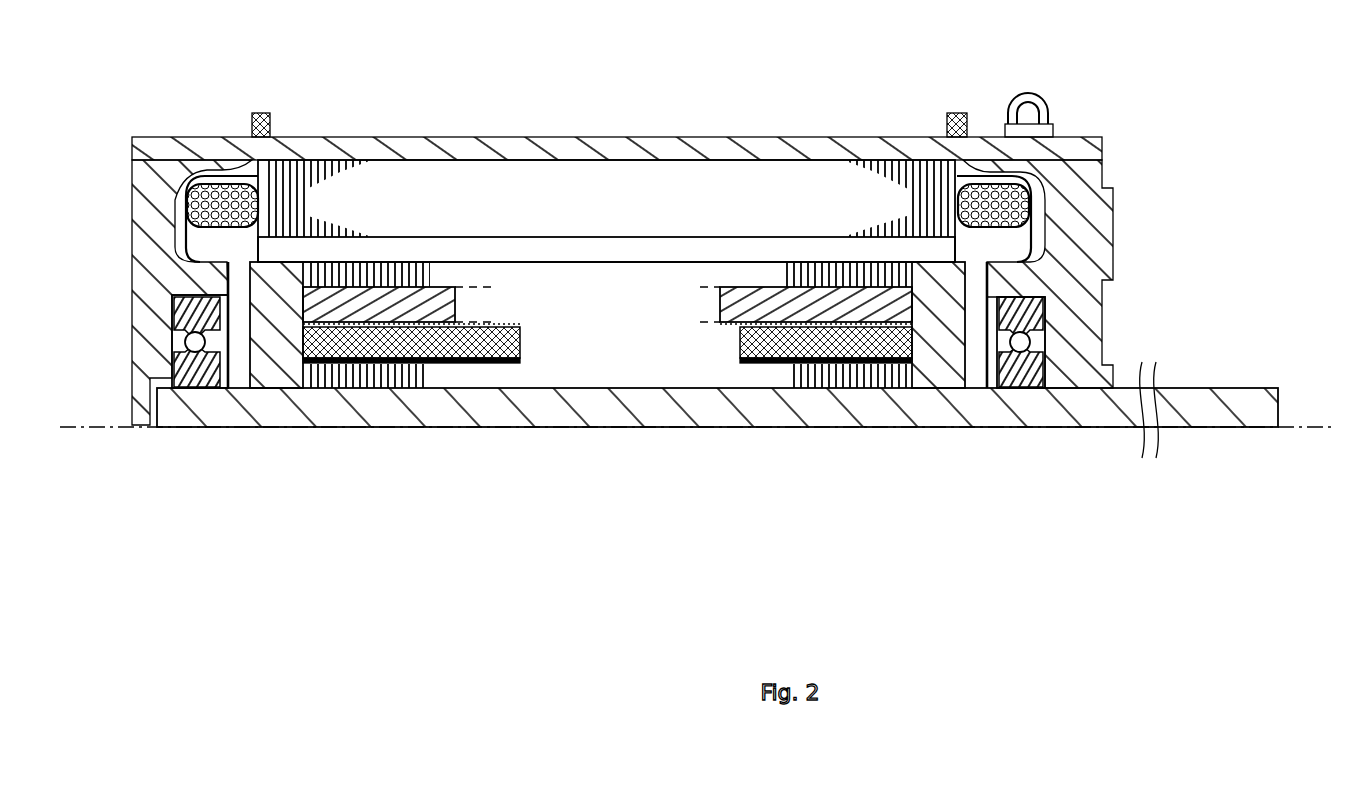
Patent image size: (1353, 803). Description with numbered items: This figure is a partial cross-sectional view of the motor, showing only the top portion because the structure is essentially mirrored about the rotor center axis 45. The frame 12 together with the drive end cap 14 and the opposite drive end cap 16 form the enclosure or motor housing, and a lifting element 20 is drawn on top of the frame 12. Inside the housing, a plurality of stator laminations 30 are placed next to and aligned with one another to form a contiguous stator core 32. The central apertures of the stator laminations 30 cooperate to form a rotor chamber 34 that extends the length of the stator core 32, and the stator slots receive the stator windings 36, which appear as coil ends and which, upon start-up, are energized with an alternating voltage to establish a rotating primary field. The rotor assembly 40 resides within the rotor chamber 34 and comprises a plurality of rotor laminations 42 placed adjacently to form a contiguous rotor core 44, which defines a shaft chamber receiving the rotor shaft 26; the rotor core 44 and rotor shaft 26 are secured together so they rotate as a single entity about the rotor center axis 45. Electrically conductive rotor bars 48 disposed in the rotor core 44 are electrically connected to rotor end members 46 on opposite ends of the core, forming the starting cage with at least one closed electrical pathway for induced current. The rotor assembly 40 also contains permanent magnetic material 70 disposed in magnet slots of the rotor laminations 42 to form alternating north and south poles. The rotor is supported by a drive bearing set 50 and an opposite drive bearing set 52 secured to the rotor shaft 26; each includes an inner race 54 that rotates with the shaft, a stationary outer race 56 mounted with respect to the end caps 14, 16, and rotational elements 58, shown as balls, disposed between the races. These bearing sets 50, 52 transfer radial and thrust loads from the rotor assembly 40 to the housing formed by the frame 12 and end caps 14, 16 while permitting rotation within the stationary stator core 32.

The frame 12 is at (373, 137).
The drive end cap 14 is at (1102, 143).
The opposite drive end cap 16 is at (148, 137).
The eyebolt 20 is at (1047, 100).
The rotor shaft 26 is at (1272, 415).
The stator laminations 30 is at (330, 158).
The stator core 32 is at (683, 187).
The rotor chamber 34 is at (943, 250).
The stator windings 36 is at (985, 190).
The rotor assembly 40 is at (702, 378).
The rotor laminations 42 is at (348, 385).
The rotor core 44 is at (485, 385).
The rotor center axis 45 is at (62, 432).
The rotor end members 46 is at (270, 375).
The rotor bars 48 is at (425, 300).
The drive bearing set 50 is at (180, 342).
The opposite drive bearing set 52 is at (1047, 363).
The inner race 54 is at (197, 380).
The outer race 56 is at (173, 296).
The rotational elements 58 is at (183, 338).
The permanent magnetic material 70 is at (477, 340).